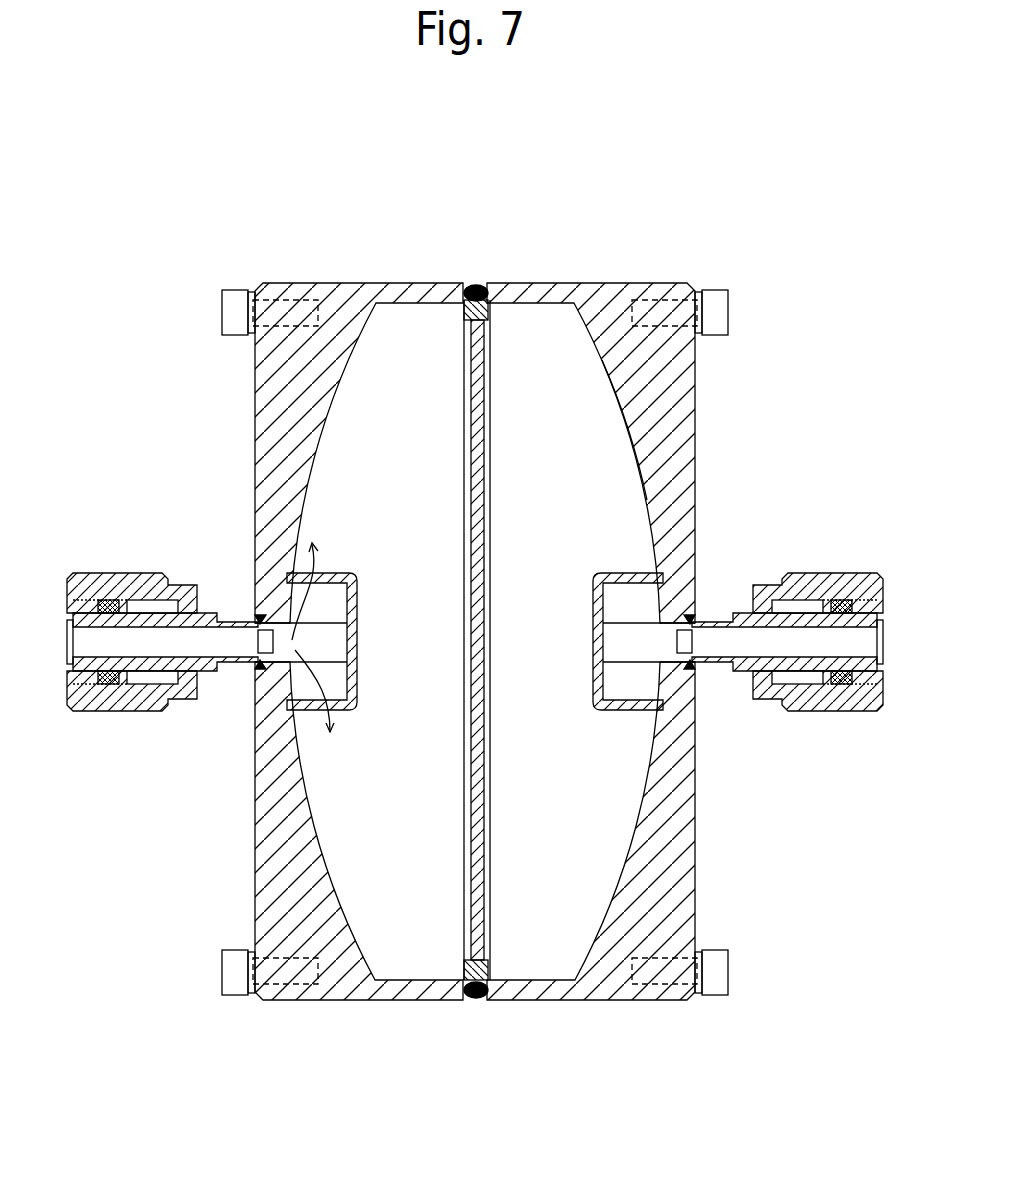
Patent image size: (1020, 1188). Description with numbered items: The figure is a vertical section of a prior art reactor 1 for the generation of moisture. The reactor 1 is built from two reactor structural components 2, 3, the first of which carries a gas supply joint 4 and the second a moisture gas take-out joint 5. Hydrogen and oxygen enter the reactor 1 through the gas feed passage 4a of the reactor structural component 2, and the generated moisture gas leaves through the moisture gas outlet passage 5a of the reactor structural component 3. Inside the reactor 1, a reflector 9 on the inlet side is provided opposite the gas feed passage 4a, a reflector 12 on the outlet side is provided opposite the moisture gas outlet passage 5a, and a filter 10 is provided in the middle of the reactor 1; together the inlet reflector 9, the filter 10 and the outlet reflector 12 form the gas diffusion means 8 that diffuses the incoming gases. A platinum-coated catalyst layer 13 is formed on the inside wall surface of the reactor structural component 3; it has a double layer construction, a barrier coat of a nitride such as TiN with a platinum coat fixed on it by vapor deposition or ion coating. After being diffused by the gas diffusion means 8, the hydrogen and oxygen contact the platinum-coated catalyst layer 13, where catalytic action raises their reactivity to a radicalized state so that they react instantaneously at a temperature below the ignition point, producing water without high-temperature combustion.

The reactor 1 is at (680, 215).
The reactor structural component 2 is at (275, 410).
The reactor structural component 3 is at (673, 392).
The gas supply joint 4 is at (85, 573).
The gas feed passage 4a is at (218, 640).
The moisture gas take-out joint 5 is at (842, 573).
The moisture gas outlet passage 5a is at (732, 640).
The gas diffusion means 8 is at (475, 641).
The reflector on the inlet side 9 is at (360, 640).
The filter 10 is at (480, 748).
The reflector on the outlet side 12 is at (595, 626).
The platinum-coated catalyst layer 13 is at (640, 470).